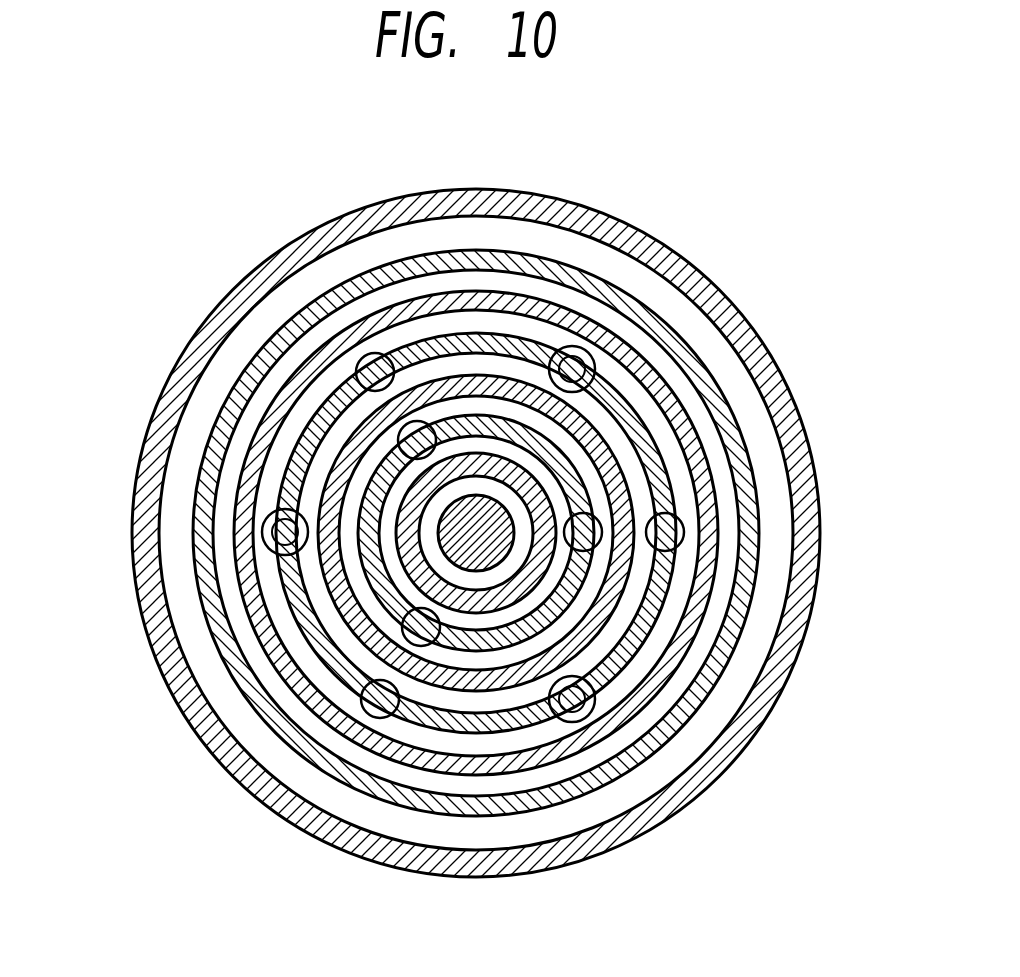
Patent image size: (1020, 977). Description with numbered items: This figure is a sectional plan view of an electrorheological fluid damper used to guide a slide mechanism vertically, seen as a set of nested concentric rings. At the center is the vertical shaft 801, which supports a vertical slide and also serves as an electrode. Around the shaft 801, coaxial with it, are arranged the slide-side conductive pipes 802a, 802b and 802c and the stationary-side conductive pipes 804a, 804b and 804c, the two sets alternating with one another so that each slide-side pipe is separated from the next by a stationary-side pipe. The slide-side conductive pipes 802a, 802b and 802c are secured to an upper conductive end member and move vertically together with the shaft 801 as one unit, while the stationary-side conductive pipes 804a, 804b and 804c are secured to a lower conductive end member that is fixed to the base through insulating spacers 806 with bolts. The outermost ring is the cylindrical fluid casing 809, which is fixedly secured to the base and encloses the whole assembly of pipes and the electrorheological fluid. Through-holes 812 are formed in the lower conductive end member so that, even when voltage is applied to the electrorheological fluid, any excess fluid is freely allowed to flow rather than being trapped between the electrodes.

The vertical shaft 801 is at (491, 512).
The slide-side conductive pipe 802a is at (400, 637).
The slide-side conductive pipe 802b is at (290, 584).
The slide-side conductive pipe 802c is at (200, 578).
The stationary-side conductive pipe 804a is at (350, 748).
The stationary-side conductive pipe 804b is at (427, 685).
The stationary-side conductive pipe 804c is at (472, 612).
The insulating spacer 806 is at (586, 347).
The cylindrical fluid casing 809 is at (137, 478).
The through-hole 812 is at (410, 421).